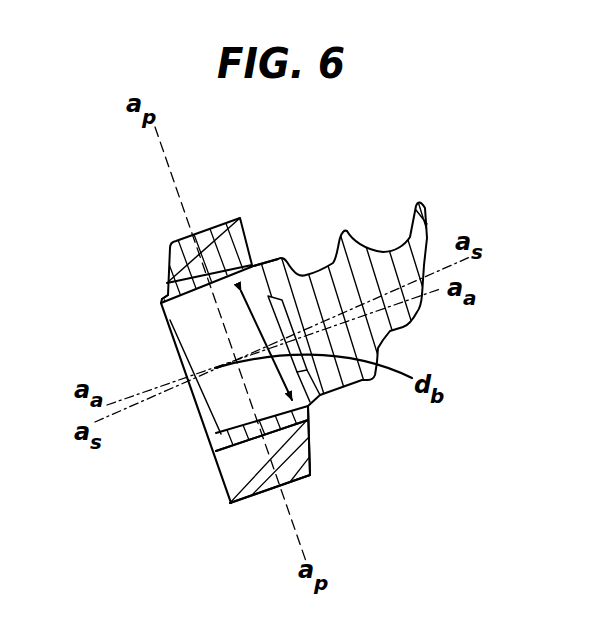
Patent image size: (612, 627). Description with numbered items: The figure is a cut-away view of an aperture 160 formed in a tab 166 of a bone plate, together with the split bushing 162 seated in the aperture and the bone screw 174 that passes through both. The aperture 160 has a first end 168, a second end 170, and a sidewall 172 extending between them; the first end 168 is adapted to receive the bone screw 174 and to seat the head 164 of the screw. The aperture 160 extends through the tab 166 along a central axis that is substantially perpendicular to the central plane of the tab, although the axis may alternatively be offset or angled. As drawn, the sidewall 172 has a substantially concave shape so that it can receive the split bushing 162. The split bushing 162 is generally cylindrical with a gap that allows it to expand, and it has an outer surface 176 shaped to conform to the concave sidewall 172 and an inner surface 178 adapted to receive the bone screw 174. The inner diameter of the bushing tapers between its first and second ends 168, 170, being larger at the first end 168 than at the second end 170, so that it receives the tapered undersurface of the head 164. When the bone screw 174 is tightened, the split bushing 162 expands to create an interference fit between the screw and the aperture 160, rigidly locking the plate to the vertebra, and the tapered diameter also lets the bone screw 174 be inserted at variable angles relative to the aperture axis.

The aperture 160 is at (247, 216).
The split bushing 162 is at (175, 281).
The head 164 is at (166, 314).
The tab 166 is at (172, 246).
The first end 168 is at (203, 452).
The second end 170 is at (320, 424).
The sidewall 172 is at (242, 464).
The bone screw 174 is at (393, 226).
The outer surface 176 is at (215, 278).
The inner surface 178 is at (263, 419).